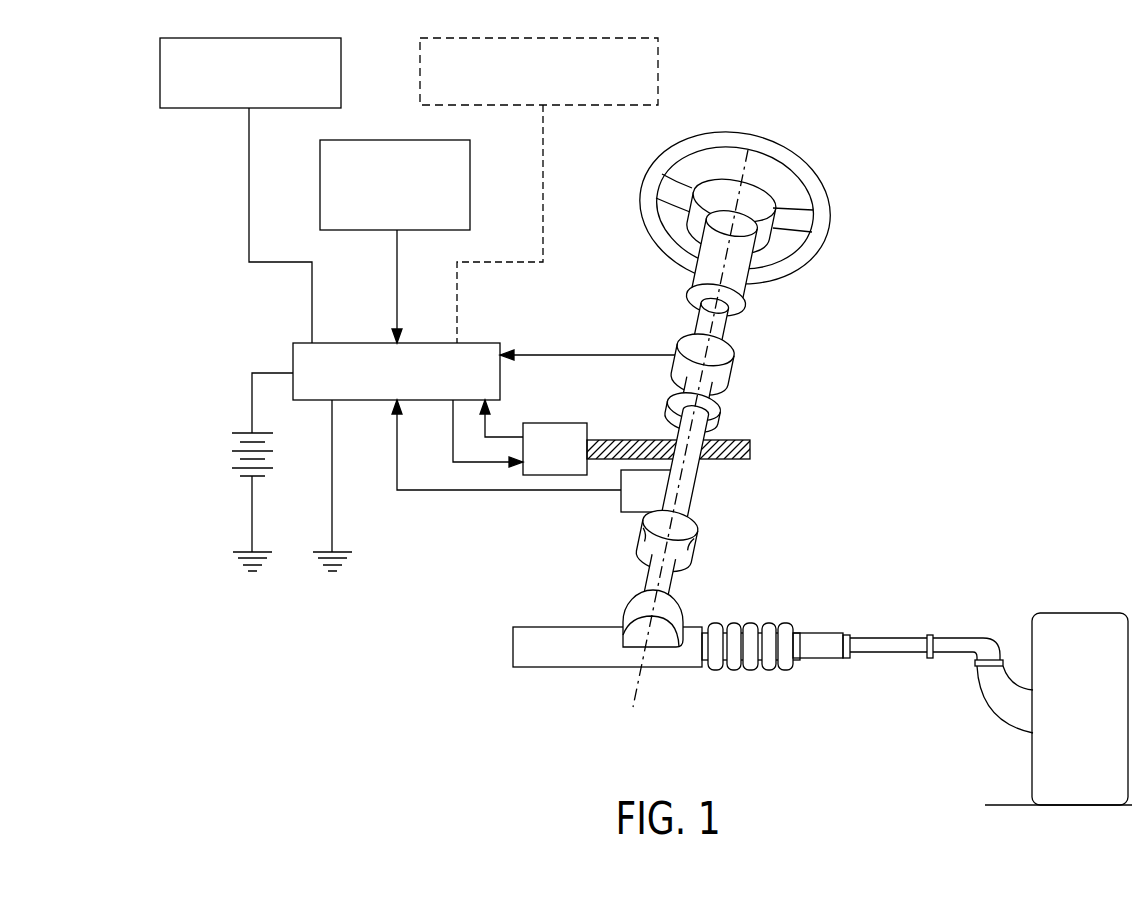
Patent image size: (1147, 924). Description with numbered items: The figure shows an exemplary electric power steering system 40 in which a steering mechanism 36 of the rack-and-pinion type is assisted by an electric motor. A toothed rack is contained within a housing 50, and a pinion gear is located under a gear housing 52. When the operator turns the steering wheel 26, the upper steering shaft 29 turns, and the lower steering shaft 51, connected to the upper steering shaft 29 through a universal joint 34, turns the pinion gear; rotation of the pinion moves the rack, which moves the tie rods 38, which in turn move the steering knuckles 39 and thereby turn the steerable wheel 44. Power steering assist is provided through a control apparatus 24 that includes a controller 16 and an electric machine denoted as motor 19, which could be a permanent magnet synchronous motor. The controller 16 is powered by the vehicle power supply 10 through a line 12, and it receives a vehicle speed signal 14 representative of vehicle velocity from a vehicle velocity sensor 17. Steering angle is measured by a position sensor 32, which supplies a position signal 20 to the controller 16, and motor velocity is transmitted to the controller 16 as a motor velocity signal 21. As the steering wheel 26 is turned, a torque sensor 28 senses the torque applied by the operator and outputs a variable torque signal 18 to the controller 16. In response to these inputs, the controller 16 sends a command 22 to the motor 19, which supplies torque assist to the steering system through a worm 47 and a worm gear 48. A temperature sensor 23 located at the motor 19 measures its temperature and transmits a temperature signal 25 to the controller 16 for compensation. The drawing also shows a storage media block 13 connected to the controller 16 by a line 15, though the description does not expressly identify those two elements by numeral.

The vehicle power supply 10 is at (243, 457).
The line 12 is at (268, 370).
The storage media 13 is at (190, 110).
The vehicle speed signal 14 is at (397, 247).
The storage media connection 15 is at (248, 172).
The controller 16 is at (367, 342).
The vehicle velocity sensor 17 is at (397, 139).
The torque signal 18 is at (598, 353).
The motor 19 is at (565, 423).
The position signal 20 is at (510, 492).
The motor velocity signal 21 is at (510, 433).
The command 22 is at (470, 467).
The temperature sensor 23 is at (665, 87).
The control apparatus 24 is at (913, 348).
The temperature signal 25 is at (548, 167).
The steering wheel 26 is at (791, 155).
The torque sensor 28 is at (728, 358).
The upper steering shaft 29 is at (706, 322).
The position sensor 32 is at (620, 502).
The universal joint 34 is at (690, 538).
The steering mechanism 36 is at (775, 613).
The tie rods 38 is at (883, 648).
The steering knuckles 39 is at (1002, 697).
The electric power steering system 40 is at (990, 443).
The steerable wheel 44 is at (1068, 628).
The worm 47 is at (752, 448).
The worm gear 48 is at (708, 413).
The housing 50 is at (550, 657).
The lower steering shaft 51 is at (672, 587).
The gear housing 52 is at (632, 608).